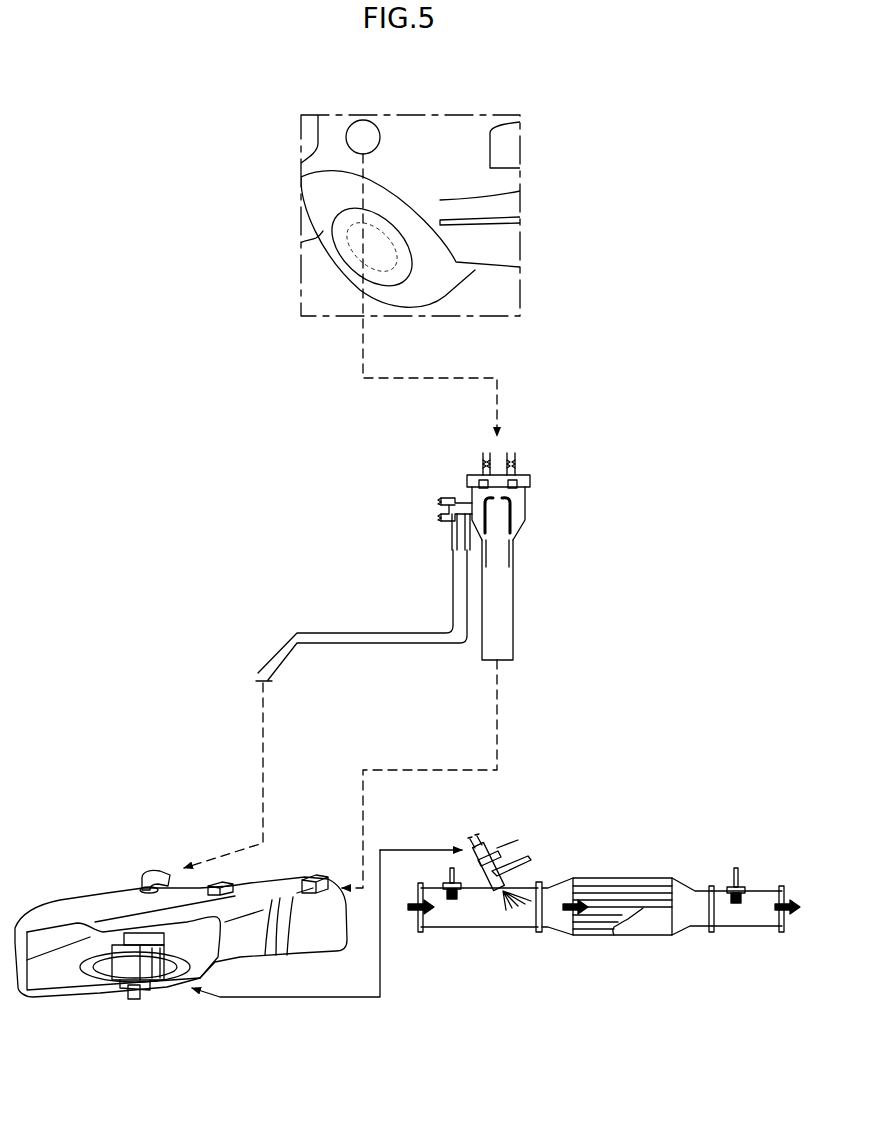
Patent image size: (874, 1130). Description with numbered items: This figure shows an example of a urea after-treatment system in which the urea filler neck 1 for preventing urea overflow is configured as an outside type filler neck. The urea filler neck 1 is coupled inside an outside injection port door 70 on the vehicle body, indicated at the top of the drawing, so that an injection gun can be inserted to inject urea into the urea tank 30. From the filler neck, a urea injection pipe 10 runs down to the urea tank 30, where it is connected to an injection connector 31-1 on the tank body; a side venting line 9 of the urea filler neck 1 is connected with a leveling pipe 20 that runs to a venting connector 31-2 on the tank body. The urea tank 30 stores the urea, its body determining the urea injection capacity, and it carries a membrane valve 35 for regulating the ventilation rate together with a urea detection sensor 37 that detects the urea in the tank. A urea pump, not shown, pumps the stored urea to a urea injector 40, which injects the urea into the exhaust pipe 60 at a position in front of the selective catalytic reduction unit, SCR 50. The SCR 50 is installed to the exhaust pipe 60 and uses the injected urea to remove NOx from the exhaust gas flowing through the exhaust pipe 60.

The urea filler neck 1 is at (530, 499).
The side venting line 9 is at (440, 509).
The urea injection pipe 10 is at (500, 607).
The leveling pipe 20 is at (460, 603).
The urea tank 30 is at (72, 913).
The injection connector 31-1 is at (313, 863).
The venting connector 31-2 is at (157, 870).
The membrane valve 35 is at (143, 1000).
The urea detection sensor 37 is at (223, 893).
The urea injector 40 is at (527, 855).
The selective catalytic reduction (SCR) 50 is at (632, 888).
The exhaust pipe 60 is at (482, 912).
The outside injection port door 70 is at (362, 138).